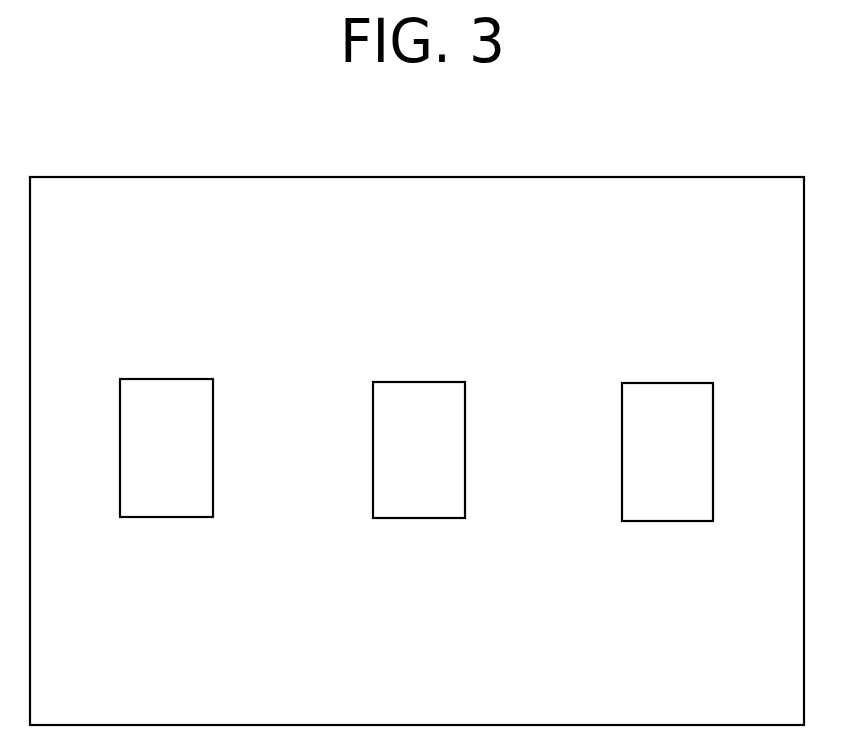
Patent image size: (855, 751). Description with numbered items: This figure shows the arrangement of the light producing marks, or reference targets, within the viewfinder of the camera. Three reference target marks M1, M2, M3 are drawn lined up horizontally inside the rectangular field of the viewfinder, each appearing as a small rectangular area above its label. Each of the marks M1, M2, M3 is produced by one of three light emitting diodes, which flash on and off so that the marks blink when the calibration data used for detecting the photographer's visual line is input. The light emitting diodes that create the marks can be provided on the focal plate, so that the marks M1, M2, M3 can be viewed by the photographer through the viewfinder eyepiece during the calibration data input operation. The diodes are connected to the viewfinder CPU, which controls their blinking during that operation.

The reference target mark M1 is at (166, 517).
The reference target mark M2 is at (420, 518).
The reference target mark M3 is at (668, 521).